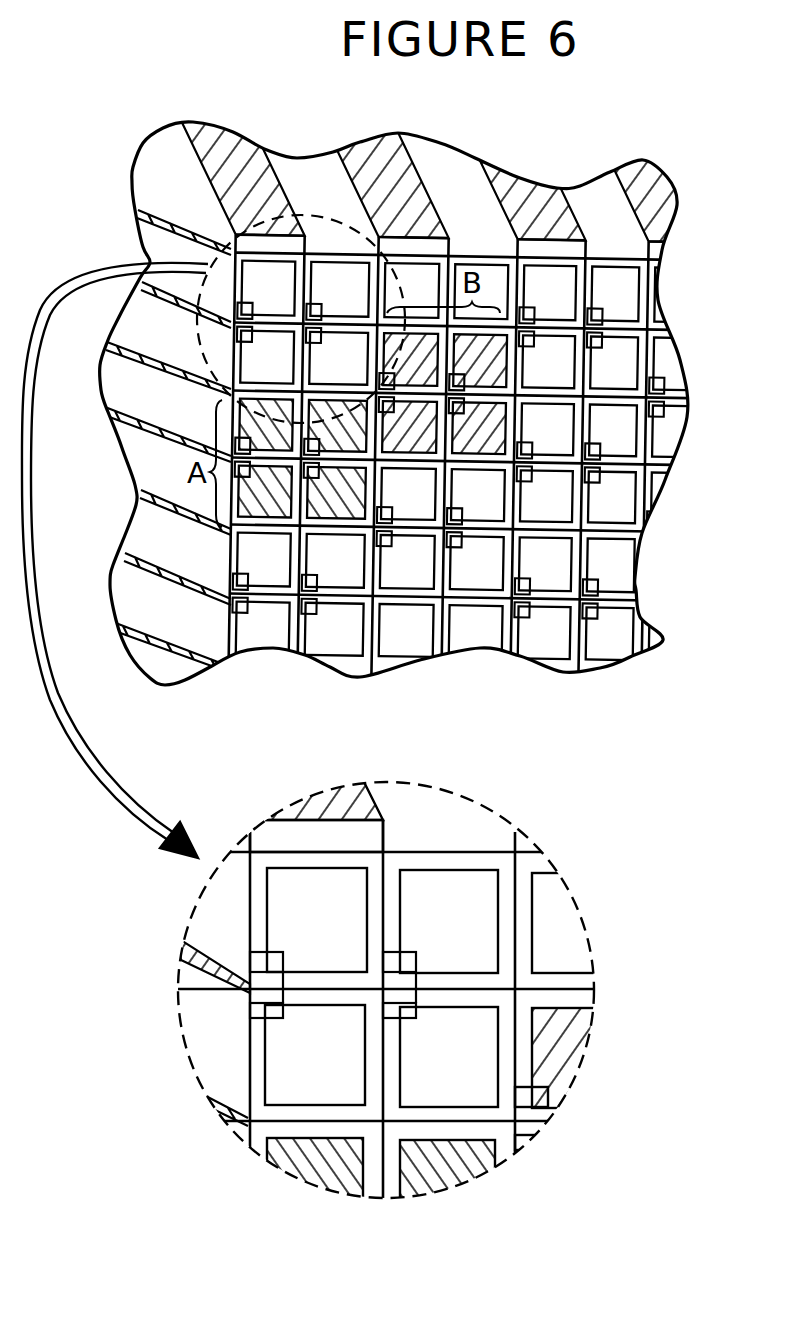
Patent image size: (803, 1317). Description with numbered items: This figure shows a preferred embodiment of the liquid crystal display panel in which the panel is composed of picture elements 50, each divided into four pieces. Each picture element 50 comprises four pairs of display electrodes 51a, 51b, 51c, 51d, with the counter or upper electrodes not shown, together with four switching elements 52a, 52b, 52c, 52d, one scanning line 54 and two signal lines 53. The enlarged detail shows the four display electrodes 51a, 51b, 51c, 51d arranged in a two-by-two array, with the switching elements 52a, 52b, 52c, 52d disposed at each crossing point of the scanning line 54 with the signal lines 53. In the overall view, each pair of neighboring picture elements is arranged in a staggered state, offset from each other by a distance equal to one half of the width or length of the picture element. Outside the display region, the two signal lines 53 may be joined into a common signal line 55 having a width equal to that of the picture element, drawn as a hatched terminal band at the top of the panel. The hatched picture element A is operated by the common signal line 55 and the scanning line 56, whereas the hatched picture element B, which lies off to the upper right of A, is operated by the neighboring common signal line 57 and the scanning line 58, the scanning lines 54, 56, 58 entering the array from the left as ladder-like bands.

The picture element 50 is at (463, 560).
The display electrode 51a is at (317, 920).
The display electrode 51b is at (449, 921).
The display electrode 51c is at (449, 1057).
The display electrode 51d is at (315, 1055).
The switching element 52a is at (284, 962).
The switching element 52b is at (420, 964).
The switching element 52c is at (418, 1014).
The switching element 52d is at (283, 1013).
The signal line 53 is at (230, 228).
The scanning line 54 is at (162, 300).
The common signal line 55 is at (190, 152).
The scanning line 56 is at (153, 440).
The common signal line 57 is at (405, 180).
The scanning line 58 is at (157, 372).